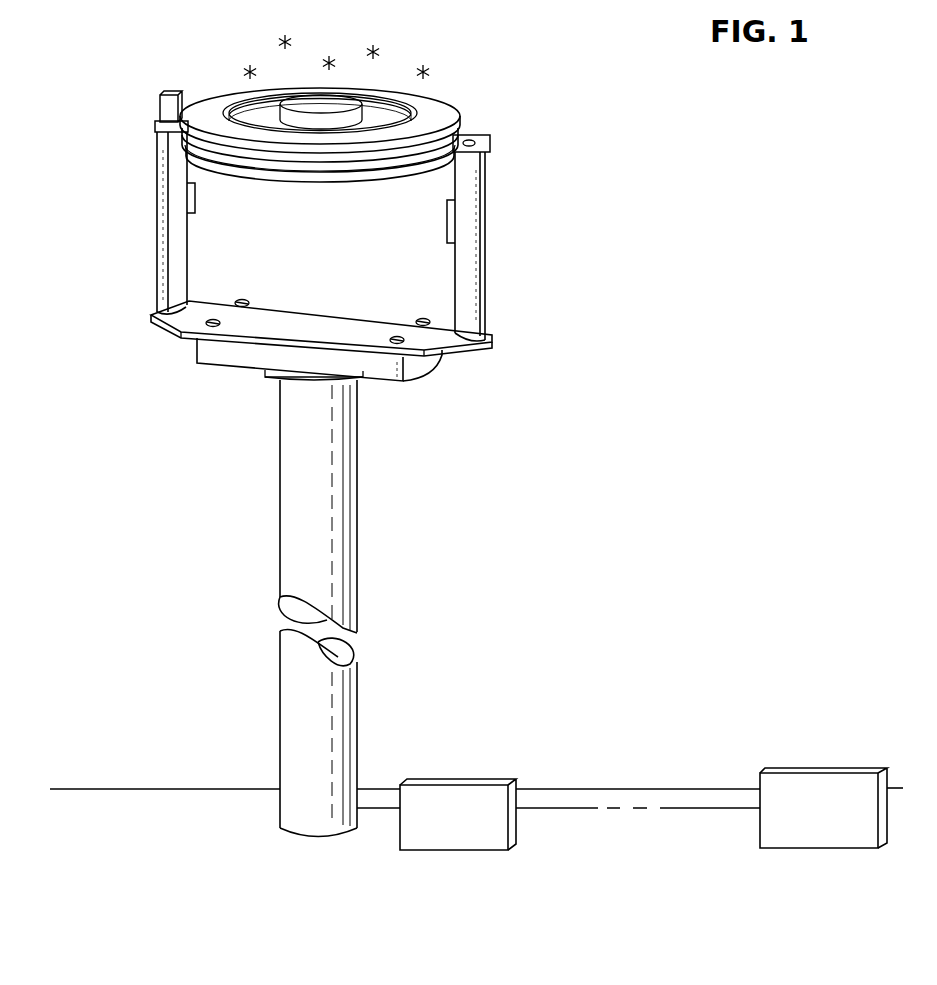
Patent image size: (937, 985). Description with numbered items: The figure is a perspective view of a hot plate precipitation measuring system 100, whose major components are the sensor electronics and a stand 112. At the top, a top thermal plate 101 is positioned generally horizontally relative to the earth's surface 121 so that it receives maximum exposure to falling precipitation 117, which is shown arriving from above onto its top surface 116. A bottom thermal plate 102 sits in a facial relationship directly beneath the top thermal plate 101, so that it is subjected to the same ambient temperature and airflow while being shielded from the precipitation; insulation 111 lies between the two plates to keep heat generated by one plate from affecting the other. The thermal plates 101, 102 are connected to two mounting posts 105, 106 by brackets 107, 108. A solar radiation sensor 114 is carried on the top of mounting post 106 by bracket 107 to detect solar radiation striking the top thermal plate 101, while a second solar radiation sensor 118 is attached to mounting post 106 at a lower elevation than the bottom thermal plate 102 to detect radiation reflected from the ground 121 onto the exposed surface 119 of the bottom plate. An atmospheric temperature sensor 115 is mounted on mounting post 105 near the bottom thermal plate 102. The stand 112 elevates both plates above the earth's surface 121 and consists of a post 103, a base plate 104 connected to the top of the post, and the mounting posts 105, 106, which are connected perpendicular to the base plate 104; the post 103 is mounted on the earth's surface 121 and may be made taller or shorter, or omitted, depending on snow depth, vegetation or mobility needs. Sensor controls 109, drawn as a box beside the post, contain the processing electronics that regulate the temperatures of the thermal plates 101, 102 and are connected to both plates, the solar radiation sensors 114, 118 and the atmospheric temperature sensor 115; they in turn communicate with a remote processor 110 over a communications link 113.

The hot plate precipitation measuring system 100 is at (492, 37).
The top thermal plate 101 is at (462, 116).
The bottom thermal plate 102 is at (274, 178).
The post 103 is at (350, 554).
The base plate 104 is at (464, 352).
The mounting post 105 is at (472, 286).
The mounting post 106 is at (172, 254).
The bracket 107 is at (158, 123).
The bracket 108 is at (487, 140).
The sensor controls 109 is at (508, 833).
The remote processor 110 is at (822, 848).
The insulation 111 is at (383, 161).
The stand 112 is at (378, 394).
The communications link 113 is at (690, 812).
The solar radiation sensor 114 is at (166, 106).
The atmospheric temperature sensor 115 is at (448, 218).
The top surface 116 is at (205, 112).
The precipitation 117 is at (379, 44).
The solar radiation sensor 118 is at (196, 203).
The exposed surface 119 is at (307, 180).
The earth's surface 121 is at (135, 789).